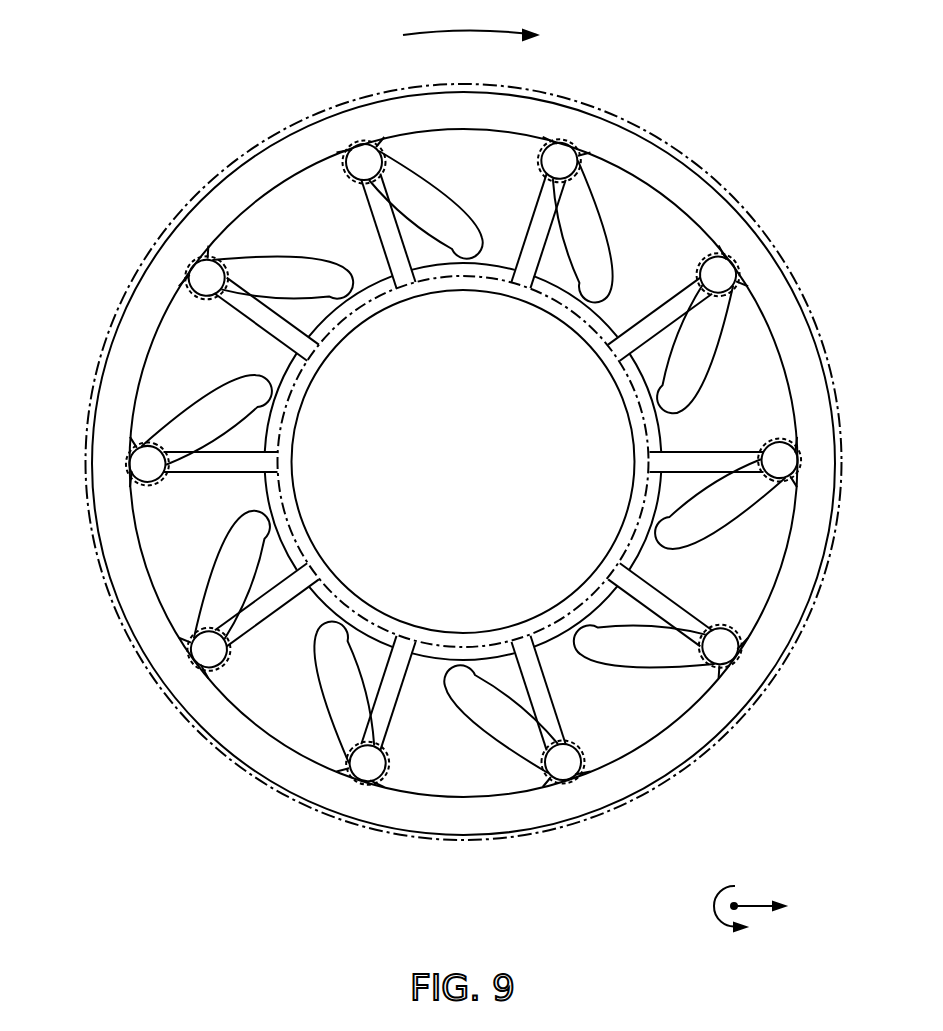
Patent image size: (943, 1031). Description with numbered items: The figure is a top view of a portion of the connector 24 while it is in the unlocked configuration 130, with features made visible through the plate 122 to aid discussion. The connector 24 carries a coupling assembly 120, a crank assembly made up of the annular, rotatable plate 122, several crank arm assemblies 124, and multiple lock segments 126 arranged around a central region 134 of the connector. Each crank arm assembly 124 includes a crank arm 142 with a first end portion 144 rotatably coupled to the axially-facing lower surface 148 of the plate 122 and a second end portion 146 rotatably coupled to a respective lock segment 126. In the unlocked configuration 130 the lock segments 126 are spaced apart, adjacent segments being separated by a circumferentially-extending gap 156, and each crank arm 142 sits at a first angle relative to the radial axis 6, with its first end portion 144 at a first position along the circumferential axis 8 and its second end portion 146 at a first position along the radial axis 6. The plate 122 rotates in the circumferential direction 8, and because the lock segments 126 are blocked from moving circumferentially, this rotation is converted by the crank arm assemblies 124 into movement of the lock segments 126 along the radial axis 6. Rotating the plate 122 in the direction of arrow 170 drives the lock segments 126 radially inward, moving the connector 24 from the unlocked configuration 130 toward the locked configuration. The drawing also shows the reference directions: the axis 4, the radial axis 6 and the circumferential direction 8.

The connector 24 is at (760, 80).
The unlocked configuration 130 is at (730, 130).
The plate 122 is at (138, 265).
The lock segments 126 is at (462, 148).
The coupling assembly 120 is at (293, 222).
The crank arm assembly 124 is at (187, 370).
The crank arm 142 is at (185, 410).
The first end portion 144 is at (148, 465).
The surface of the plate 148 is at (140, 488).
The circumferentially-extending gap 156 is at (300, 345).
The second end portion 146 is at (290, 380).
The hub bore 134 is at (524, 484).
The arrow 170 is at (465, 33).
The axial direction 4 is at (734, 906).
The radial axis 6 is at (753, 908).
The circumferential direction 8 is at (710, 908).